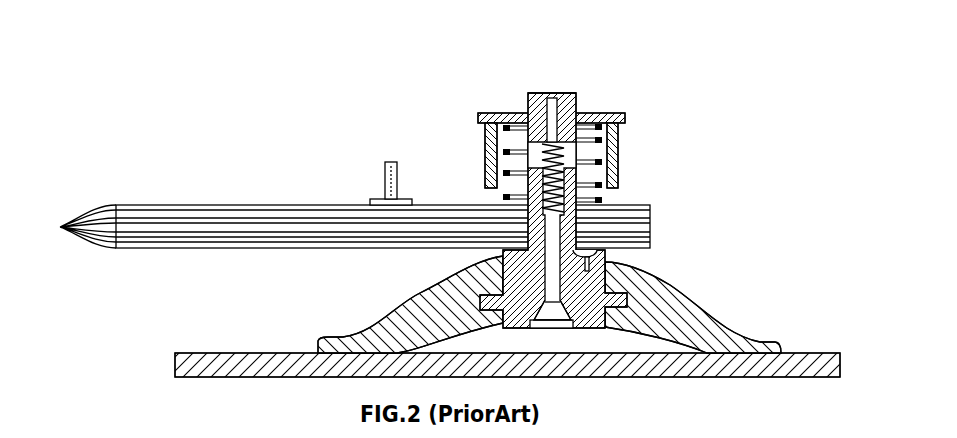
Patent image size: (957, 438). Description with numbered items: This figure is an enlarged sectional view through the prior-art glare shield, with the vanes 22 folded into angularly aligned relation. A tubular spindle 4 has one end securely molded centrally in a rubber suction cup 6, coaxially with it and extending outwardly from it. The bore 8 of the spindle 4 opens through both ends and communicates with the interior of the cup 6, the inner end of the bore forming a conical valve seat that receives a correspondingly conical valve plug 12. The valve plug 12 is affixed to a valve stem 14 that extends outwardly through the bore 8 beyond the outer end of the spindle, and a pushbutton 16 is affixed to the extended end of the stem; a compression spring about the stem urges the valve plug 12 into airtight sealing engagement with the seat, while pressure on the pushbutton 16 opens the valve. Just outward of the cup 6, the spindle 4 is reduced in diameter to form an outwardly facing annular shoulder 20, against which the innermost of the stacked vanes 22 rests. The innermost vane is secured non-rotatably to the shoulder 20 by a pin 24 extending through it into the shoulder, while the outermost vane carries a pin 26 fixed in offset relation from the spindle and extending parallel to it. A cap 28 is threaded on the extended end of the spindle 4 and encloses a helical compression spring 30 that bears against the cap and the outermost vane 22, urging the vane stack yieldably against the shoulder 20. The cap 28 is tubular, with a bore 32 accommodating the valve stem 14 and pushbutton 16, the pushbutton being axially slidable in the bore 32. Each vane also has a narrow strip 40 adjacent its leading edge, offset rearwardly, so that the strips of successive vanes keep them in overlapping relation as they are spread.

The tubular spindle 4 is at (550, 275).
The rubber suction cup 6 is at (687, 303).
The bore 8 is at (422, 290).
The conical valve plug 12 is at (540, 322).
The valve stem 14 is at (545, 108).
The pushbutton 16 is at (539, 92).
The annular shoulder 20 is at (437, 252).
The vanes 22 is at (58, 222).
The pin 24 is at (607, 262).
The pin 26 is at (386, 172).
The cap 28 is at (627, 119).
The helical compression spring 30 is at (615, 163).
The bore 32 is at (563, 98).
The narrow strip 40 is at (568, 318).